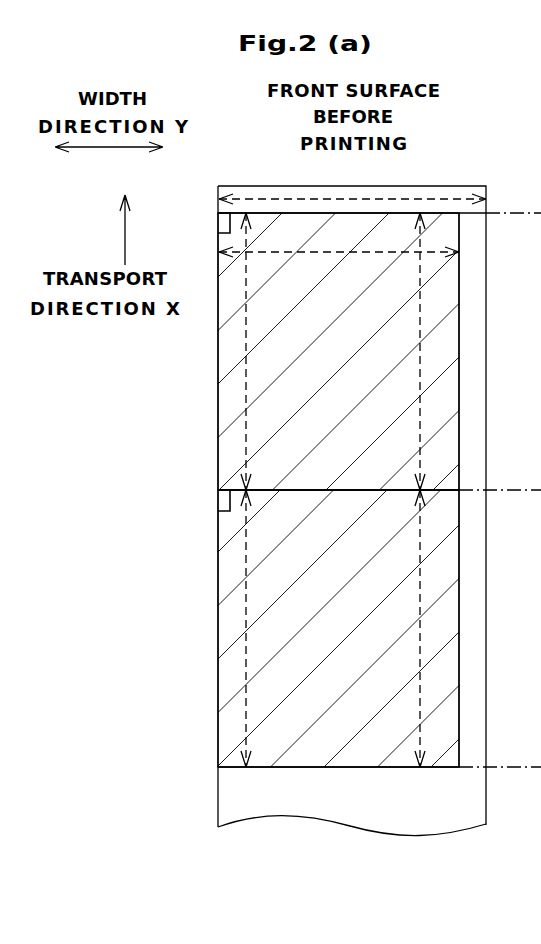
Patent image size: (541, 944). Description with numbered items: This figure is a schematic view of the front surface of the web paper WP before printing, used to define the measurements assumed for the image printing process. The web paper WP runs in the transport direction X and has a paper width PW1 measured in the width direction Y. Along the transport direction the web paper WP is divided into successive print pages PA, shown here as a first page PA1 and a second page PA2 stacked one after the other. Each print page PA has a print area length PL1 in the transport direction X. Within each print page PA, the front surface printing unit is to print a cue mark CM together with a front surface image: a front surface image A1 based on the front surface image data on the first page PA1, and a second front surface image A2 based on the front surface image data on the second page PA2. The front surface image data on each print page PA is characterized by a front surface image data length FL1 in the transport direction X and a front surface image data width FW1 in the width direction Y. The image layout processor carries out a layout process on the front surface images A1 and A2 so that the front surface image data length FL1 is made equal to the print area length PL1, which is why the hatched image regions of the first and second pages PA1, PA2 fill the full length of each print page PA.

The web paper WP is at (473, 185).
The paper width PW1 is at (246, 206).
The front surface image data width FW1 is at (435, 255).
The print area length PL1 is at (246, 286).
The front surface image data length FL1 is at (420, 443).
The cue mark CM is at (218, 223).
The print page PA is at (331, 501).
The first page PA1 is at (290, 351).
The second page PA2 is at (290, 628).
The front surface image A1 is at (338, 351).
The second front surface image A2 is at (338, 628).